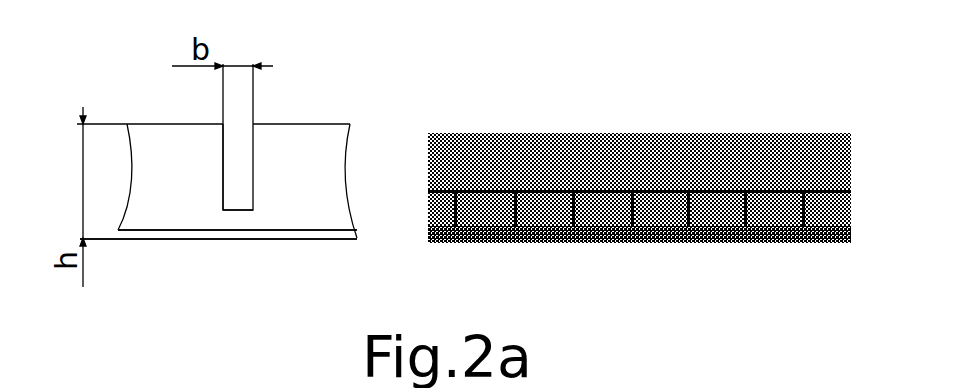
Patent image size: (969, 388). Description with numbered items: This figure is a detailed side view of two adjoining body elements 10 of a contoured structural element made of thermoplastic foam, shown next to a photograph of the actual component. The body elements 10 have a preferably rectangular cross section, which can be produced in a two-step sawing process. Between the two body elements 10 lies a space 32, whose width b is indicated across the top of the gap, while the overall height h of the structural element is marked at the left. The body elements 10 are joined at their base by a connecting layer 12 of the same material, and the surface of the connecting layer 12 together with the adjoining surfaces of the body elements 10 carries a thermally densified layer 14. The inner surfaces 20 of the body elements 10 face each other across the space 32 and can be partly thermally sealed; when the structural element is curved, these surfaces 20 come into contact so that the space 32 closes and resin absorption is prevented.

The body element 10 is at (302, 153).
The connecting layer 12 is at (238, 218).
The thermally densified layer 14 is at (300, 240).
The surface of body element 20 is at (240, 180).
The space 32 is at (235, 172).